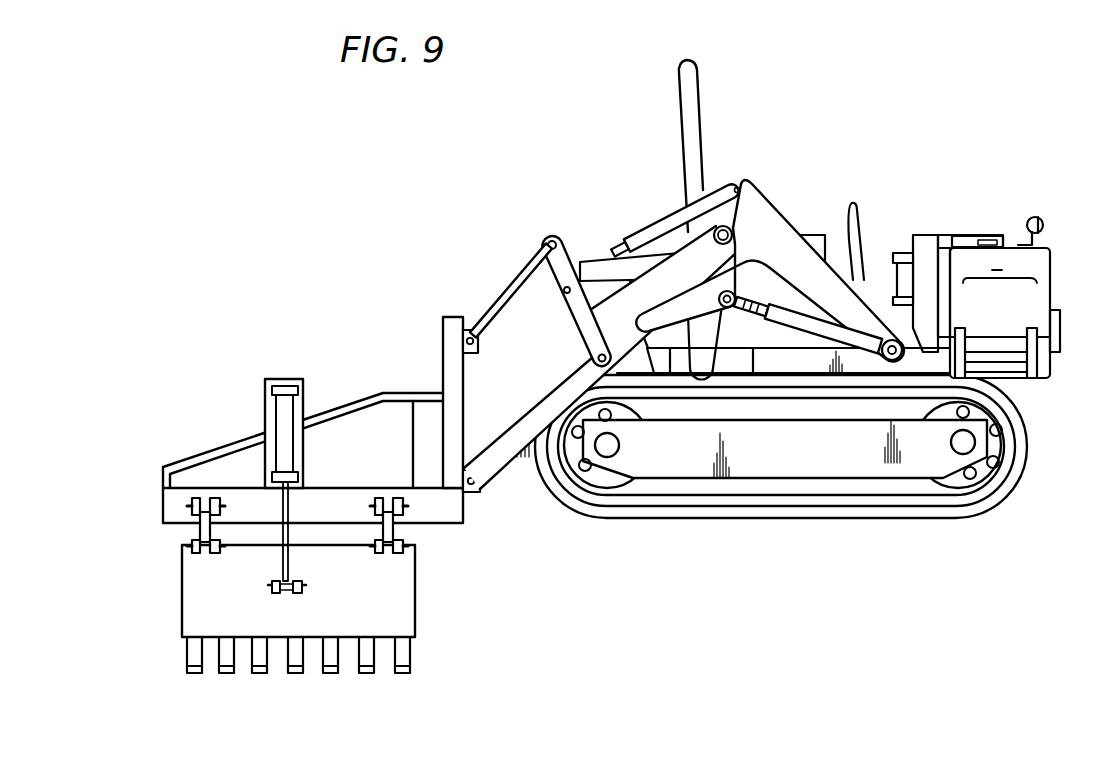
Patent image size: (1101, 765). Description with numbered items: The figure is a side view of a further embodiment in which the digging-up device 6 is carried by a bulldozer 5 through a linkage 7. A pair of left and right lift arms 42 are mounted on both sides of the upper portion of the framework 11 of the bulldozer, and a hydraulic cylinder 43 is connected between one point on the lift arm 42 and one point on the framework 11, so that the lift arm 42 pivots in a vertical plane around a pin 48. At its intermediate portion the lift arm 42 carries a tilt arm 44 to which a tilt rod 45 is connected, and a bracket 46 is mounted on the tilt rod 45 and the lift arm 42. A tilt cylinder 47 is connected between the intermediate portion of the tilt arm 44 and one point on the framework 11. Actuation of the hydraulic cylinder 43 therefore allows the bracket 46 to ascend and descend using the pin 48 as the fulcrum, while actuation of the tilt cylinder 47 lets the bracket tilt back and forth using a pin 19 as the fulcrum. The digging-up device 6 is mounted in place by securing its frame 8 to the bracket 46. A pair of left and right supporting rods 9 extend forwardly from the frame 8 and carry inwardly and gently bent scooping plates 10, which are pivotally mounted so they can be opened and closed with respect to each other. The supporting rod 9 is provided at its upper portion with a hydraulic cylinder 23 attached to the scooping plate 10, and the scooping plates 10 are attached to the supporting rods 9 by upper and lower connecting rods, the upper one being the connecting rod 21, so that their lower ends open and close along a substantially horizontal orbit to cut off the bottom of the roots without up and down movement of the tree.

The crawler tractor 5 is at (836, 150).
The digging-up device 6 is at (213, 364).
The link mechanism 7 is at (547, 183).
The frame 8 is at (420, 433).
The supporting rod 9 is at (165, 504).
The scooping plate 10 is at (195, 616).
The framework 11 is at (902, 257).
The pin 19 is at (205, 497).
The connecting rod 21 is at (192, 537).
The hydraulic cylinder 23 is at (297, 403).
The lift arm 42 is at (493, 463).
The hydraulic cylinder 43 is at (863, 345).
The tilt arm 44 is at (560, 268).
The tilt rod 45 is at (512, 277).
The bracket 46 is at (461, 333).
The tilt cylinder 47 is at (658, 232).
The pin 48 is at (738, 226).